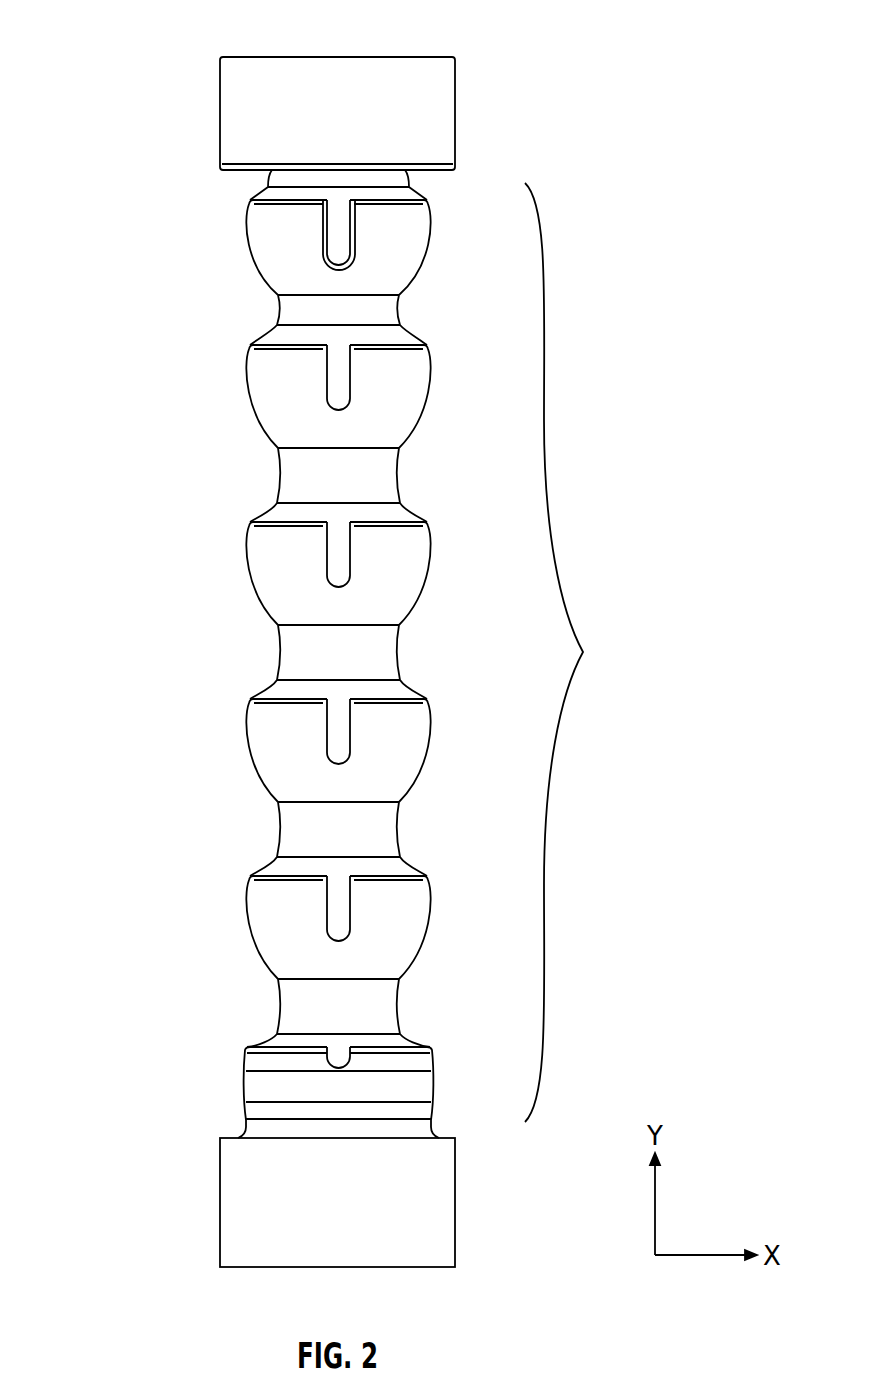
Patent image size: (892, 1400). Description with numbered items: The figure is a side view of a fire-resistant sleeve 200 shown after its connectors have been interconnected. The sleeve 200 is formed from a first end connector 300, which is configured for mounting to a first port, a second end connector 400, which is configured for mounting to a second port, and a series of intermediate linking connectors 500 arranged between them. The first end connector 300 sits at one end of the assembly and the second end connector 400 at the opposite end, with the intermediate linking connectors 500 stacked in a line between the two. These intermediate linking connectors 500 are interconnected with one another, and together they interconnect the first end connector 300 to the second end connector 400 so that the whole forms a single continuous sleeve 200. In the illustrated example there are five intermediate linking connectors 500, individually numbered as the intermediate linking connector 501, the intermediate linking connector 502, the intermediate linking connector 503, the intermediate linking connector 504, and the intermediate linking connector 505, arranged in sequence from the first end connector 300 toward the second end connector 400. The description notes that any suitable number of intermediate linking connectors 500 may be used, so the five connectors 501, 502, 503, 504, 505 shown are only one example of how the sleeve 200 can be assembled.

The sleeve 200 is at (177, 23).
The first end connector 300 is at (219, 105).
The second end connector 400 is at (220, 1197).
The intermediate linking connectors 500 is at (397, 660).
The intermediate linking connector 501 is at (246, 245).
The intermediate linking connector 502 is at (247, 393).
The intermediate linking connector 503 is at (250, 578).
The intermediate linking connector 504 is at (247, 747).
The intermediate linking connector 505 is at (248, 928).